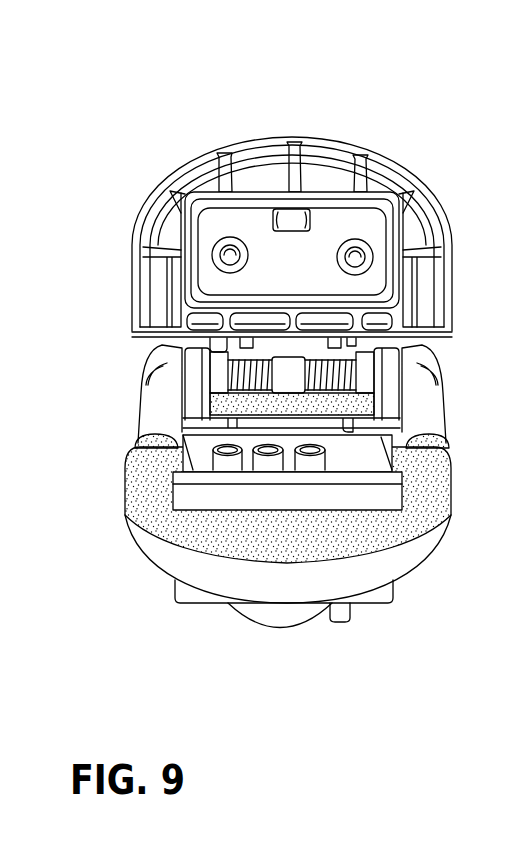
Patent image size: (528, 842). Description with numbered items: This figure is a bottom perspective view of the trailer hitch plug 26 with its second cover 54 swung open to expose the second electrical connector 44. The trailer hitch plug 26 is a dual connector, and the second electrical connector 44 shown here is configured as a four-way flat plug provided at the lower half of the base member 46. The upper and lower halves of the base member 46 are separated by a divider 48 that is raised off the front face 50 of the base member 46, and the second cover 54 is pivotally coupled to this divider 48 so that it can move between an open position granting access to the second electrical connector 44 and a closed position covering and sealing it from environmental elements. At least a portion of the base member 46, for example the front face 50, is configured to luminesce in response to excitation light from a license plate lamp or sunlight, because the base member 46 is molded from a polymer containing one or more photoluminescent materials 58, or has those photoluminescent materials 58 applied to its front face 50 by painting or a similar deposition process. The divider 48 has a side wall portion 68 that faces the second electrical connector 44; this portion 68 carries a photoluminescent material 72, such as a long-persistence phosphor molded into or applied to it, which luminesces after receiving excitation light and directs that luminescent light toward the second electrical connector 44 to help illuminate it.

The trailer hitch plug 26 is at (332, 77).
The second cover 54 is at (352, 142).
The photoluminescent material 72 is at (345, 398).
The portion of the divider 68 is at (400, 358).
The divider 48 is at (413, 362).
The photoluminescent materials 58 is at (438, 490).
The second electrical connector 44 is at (267, 465).
The base member 46 is at (422, 548).
The front face 50 is at (393, 550).